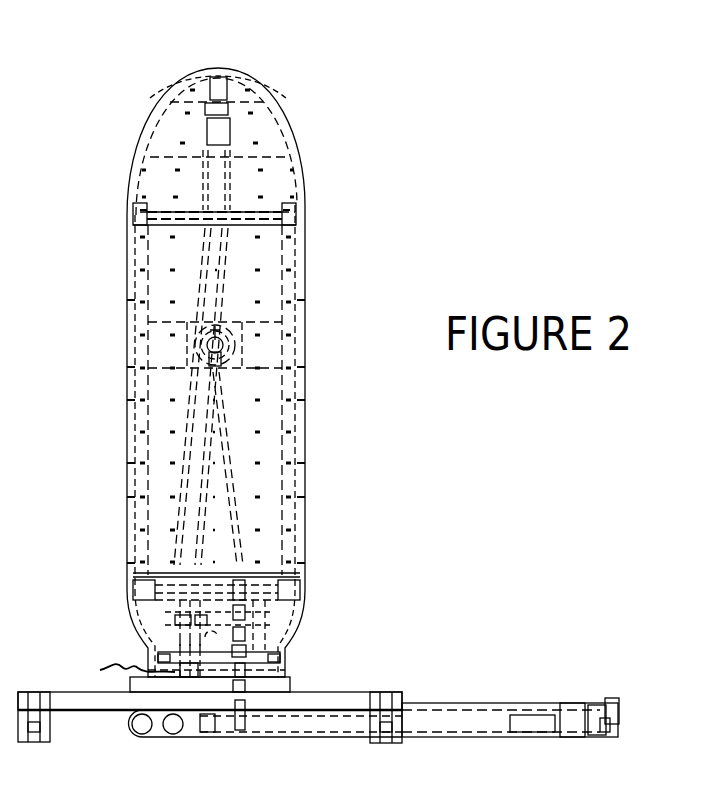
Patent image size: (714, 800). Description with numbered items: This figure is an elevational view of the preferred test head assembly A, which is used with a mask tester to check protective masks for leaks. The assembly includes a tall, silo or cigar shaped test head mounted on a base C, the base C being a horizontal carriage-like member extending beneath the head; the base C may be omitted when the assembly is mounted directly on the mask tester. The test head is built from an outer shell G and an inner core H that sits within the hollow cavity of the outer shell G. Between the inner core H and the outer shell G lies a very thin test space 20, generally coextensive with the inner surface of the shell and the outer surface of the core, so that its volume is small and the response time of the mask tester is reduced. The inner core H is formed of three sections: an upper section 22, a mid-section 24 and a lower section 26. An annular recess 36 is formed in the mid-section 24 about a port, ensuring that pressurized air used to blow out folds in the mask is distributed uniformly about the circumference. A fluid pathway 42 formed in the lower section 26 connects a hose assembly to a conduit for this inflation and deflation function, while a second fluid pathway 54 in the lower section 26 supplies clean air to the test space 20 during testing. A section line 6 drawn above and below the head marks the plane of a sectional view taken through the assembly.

The section line 6- 6 is at (218, 56).
The test space 20 is at (132, 156).
The upper section of inner core 22 is at (303, 124).
The mid-section of inner core 24 is at (305, 478).
The lower section of inner core 26 is at (305, 609).
The annular recess 36 is at (128, 351).
The fluid pathway 42 is at (279, 670).
The fluid pathway 54 is at (117, 665).
The test head assembly A is at (413, 215).
The outer shell G is at (305, 288).
The inner core H is at (300, 413).
The base C is at (370, 695).